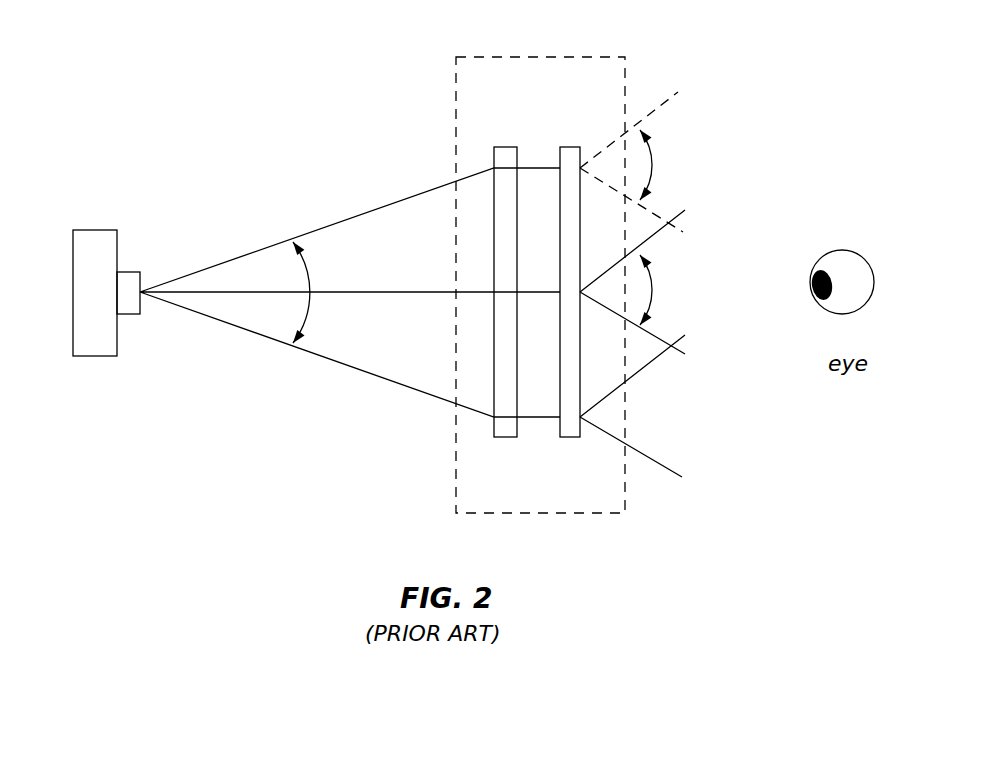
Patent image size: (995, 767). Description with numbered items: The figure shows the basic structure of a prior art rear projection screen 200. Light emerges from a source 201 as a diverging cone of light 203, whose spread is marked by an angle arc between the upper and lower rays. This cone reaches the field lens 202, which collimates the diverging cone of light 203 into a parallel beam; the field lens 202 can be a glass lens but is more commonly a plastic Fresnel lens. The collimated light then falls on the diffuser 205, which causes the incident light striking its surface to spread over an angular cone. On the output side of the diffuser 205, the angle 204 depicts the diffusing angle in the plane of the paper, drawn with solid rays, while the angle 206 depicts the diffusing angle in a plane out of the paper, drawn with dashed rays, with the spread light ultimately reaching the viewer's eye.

The rear projection screen 200 is at (568, 57).
The light source 201 is at (104, 356).
The field lens 202 is at (545, 105).
The diverging cone of light 203 is at (311, 284).
The diffusing angle on the plane of the paper 204 is at (652, 290).
The diffuser 205 is at (575, 437).
The diffusing angle on a plane out of the paper 206 is at (652, 164).